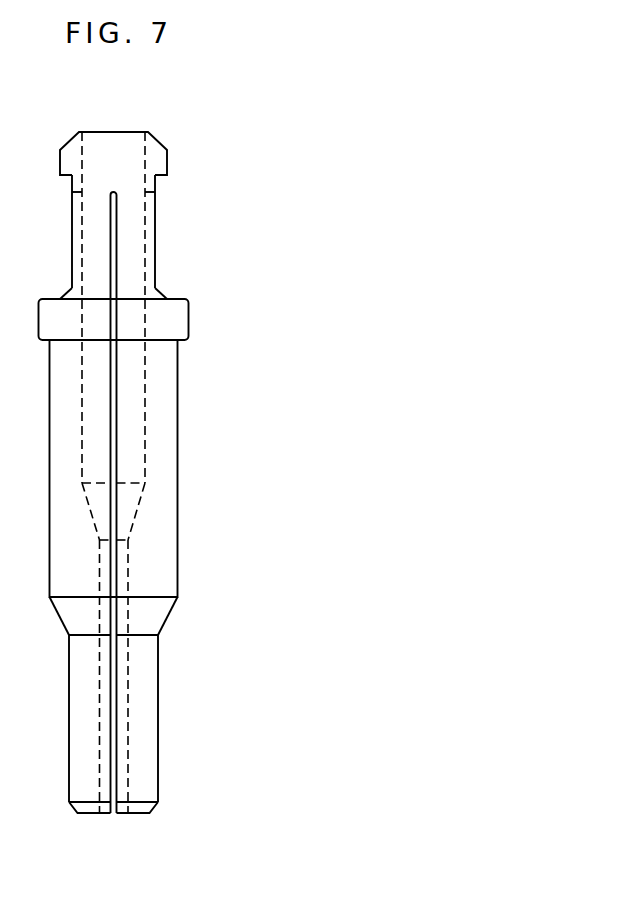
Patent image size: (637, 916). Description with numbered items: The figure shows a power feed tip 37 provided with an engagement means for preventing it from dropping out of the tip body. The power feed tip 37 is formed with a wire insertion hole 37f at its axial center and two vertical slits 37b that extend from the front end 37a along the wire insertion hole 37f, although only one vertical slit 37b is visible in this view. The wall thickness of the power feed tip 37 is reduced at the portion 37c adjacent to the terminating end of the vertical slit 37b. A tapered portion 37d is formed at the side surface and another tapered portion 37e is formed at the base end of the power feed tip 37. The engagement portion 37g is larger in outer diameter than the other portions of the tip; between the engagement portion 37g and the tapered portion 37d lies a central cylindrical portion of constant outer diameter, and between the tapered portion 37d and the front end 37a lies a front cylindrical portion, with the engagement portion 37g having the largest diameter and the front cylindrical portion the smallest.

The power feed tip 37 is at (178, 443).
The front end 37a is at (152, 808).
The vertical slit 37b is at (117, 673).
The reduced wall thickness portion 37c is at (155, 223).
The tapered portion 37d is at (172, 608).
The tapered portion 37e is at (155, 140).
The wire insertion hole 37f is at (128, 758).
The engagement portion 37g is at (188, 315).